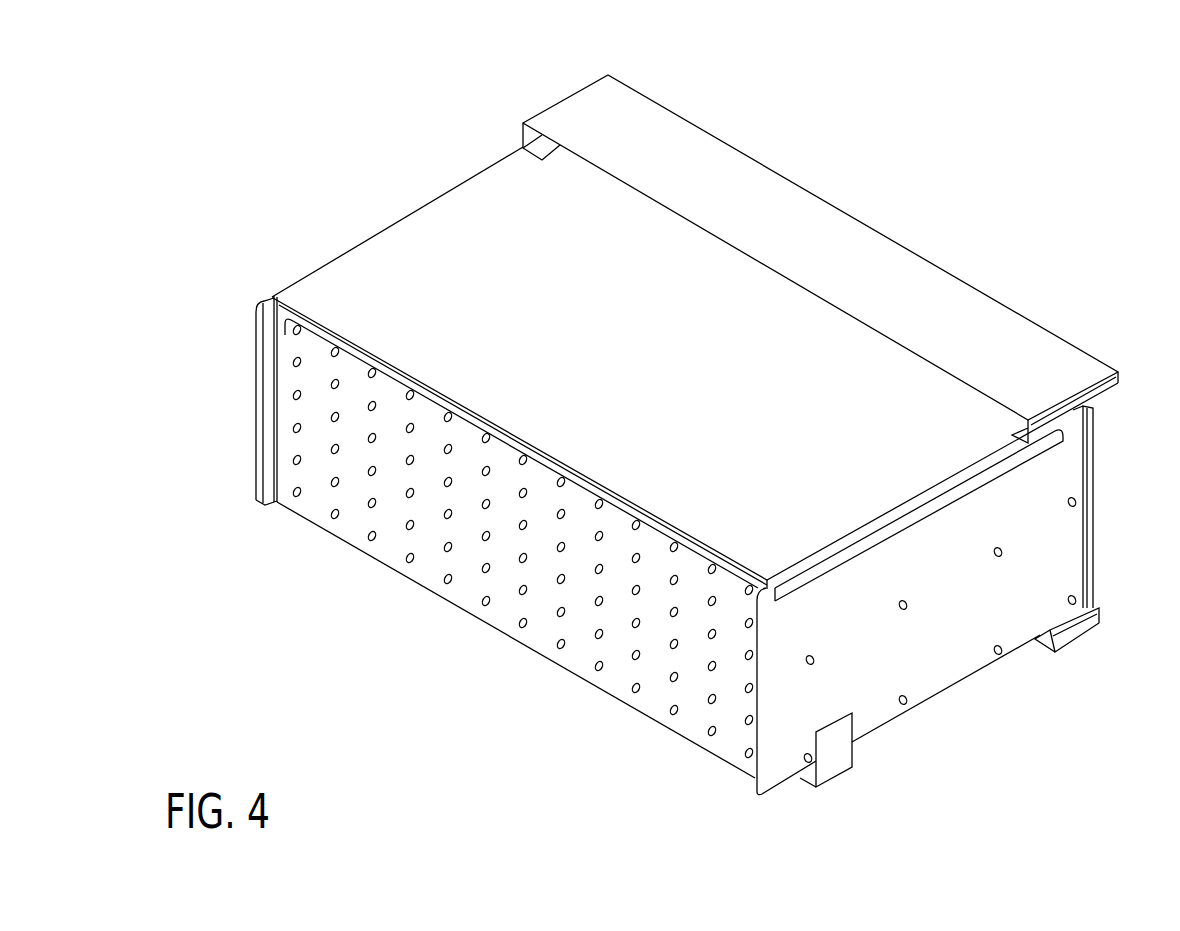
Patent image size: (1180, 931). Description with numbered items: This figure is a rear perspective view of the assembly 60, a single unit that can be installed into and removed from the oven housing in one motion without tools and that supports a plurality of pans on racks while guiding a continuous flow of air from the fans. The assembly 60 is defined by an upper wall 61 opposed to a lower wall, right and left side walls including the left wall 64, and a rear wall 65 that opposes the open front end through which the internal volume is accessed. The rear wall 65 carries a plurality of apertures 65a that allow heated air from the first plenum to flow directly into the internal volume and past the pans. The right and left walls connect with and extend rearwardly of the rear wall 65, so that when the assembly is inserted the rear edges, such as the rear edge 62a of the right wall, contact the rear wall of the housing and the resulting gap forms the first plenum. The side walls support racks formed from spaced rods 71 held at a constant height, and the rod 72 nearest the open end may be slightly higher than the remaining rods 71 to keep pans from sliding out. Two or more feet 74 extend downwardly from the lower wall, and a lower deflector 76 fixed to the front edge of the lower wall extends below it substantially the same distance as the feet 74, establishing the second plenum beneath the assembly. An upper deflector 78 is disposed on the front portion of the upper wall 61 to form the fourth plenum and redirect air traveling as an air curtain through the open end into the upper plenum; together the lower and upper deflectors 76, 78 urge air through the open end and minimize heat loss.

The assembly 60 is at (435, 228).
The upper wall 61 is at (382, 298).
The rear edge of right wall 62a is at (258, 480).
The left wall 64 is at (945, 663).
The rear wall 65 is at (580, 655).
The apertures 65a is at (486, 574).
The rods 71 is at (1002, 551).
The rod 72 is at (1075, 500).
The feet 74 is at (828, 762).
The lower deflector 76 is at (1080, 630).
The upper deflector 78 is at (942, 290).